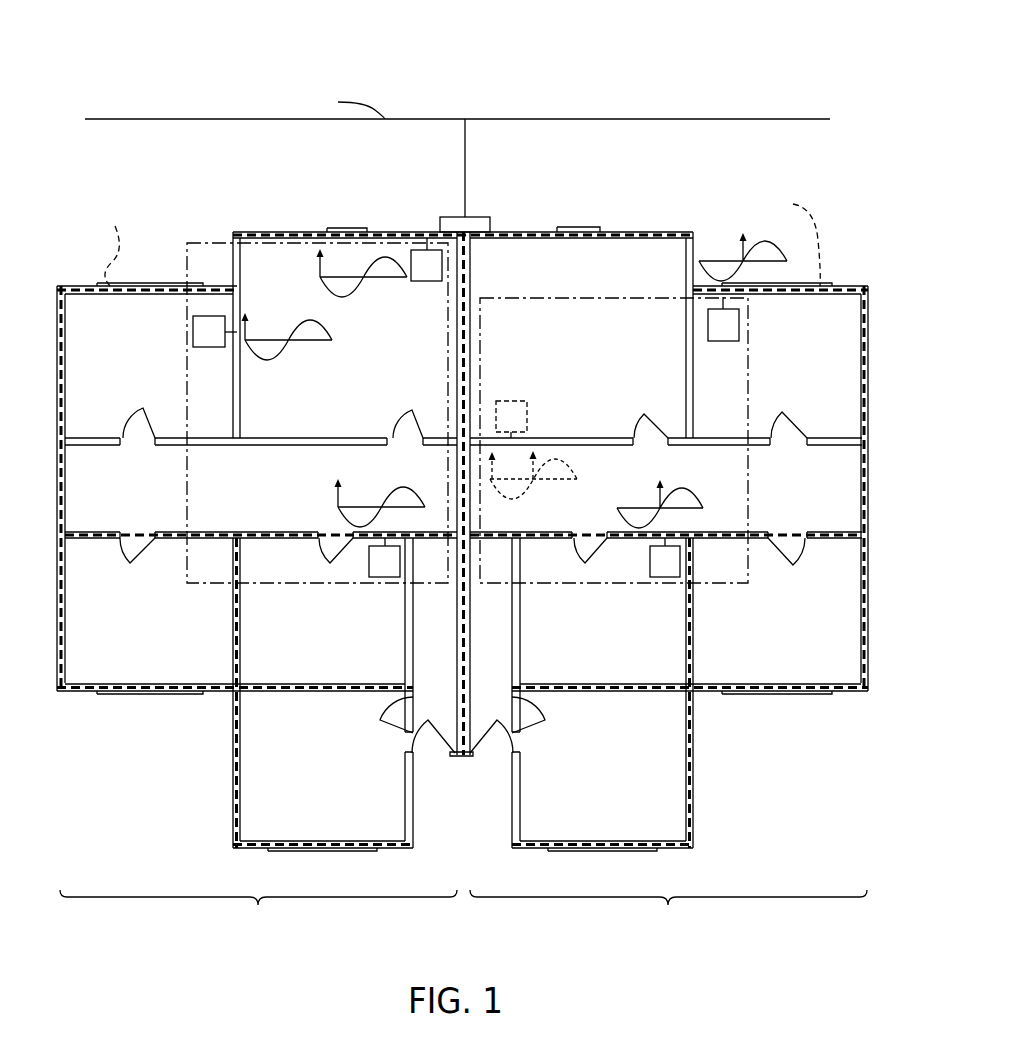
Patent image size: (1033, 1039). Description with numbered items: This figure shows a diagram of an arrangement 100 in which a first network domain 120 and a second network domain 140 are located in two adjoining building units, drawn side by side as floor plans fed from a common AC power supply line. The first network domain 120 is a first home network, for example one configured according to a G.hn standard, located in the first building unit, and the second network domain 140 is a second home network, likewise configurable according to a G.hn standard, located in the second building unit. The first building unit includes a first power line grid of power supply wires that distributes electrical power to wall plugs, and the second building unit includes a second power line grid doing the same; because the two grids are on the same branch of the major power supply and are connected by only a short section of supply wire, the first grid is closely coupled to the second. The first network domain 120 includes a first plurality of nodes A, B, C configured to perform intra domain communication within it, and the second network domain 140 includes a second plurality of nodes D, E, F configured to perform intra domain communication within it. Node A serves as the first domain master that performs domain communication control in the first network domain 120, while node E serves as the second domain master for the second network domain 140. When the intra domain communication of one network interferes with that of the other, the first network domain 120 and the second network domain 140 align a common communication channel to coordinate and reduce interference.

The power line communication system in a building 100 is at (462, 482).
The first network domain 120 is at (187, 488).
The second network domain 140 is at (748, 487).
The node A is at (215, 331).
The node B is at (384, 557).
The node C is at (426, 259).
The node D is at (511, 419).
The node E is at (665, 557).
The node F is at (723, 319).